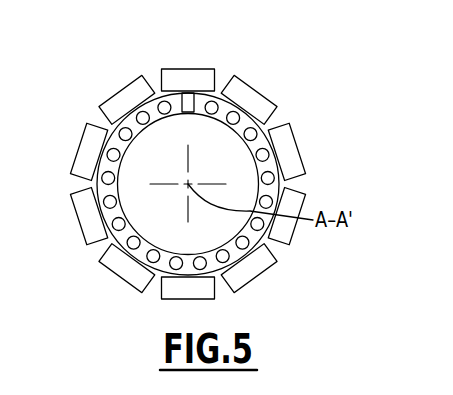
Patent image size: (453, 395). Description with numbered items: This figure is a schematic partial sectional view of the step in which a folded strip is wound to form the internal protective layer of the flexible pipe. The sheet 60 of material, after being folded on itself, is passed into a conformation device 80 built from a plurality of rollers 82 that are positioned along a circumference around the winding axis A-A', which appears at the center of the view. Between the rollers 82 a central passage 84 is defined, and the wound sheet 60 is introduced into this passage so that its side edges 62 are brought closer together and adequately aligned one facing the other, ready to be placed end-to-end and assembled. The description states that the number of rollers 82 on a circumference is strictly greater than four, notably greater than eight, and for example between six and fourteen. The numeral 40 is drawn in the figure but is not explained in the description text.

The rolling elements (balls) of bearing 40 is at (263, 240).
The sheet 60 is at (135, 253).
The side edges 62 is at (192, 108).
The conformation device 80 is at (323, 92).
The rollers 82 is at (282, 138).
The central passage 84 is at (133, 192).